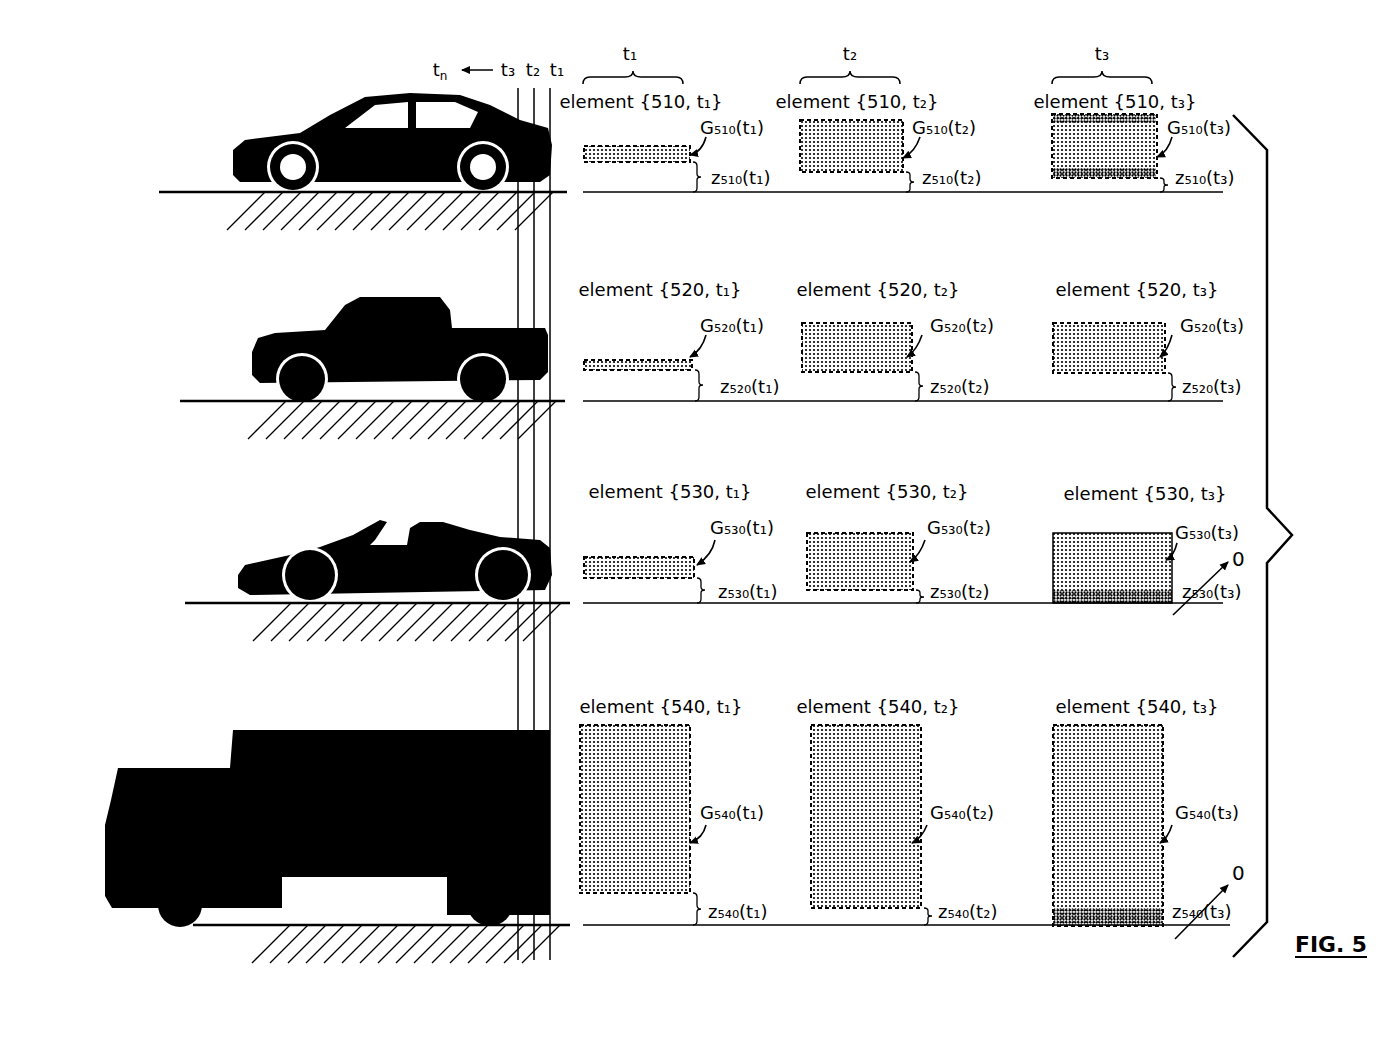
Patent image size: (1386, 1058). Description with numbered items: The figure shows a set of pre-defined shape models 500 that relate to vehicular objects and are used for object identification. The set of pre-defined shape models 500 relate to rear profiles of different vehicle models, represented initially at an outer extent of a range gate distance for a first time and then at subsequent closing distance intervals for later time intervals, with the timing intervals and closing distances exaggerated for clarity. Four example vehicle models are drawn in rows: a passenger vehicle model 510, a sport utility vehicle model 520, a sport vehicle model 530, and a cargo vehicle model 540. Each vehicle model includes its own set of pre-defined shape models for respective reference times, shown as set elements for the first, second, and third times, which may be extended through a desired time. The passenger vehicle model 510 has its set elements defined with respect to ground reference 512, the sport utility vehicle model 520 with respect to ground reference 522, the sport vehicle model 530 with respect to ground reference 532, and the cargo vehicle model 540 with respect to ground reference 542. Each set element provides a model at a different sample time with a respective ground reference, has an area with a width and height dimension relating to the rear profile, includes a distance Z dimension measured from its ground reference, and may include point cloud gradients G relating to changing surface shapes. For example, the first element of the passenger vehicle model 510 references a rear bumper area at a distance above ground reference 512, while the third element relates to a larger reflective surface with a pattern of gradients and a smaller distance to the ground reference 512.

The set of pre-defined shape models 500 is at (1290, 536).
The passenger vehicle model 510 is at (393, 88).
The ground reference 512 is at (713, 192).
The sport utility vehicle model 520 is at (355, 281).
The ground reference 522 is at (717, 401).
The sport vehicle model 530 is at (337, 500).
The ground reference 532 is at (713, 603).
The cargo vehicle model 540 is at (293, 695).
The ground reference 542 is at (647, 925).